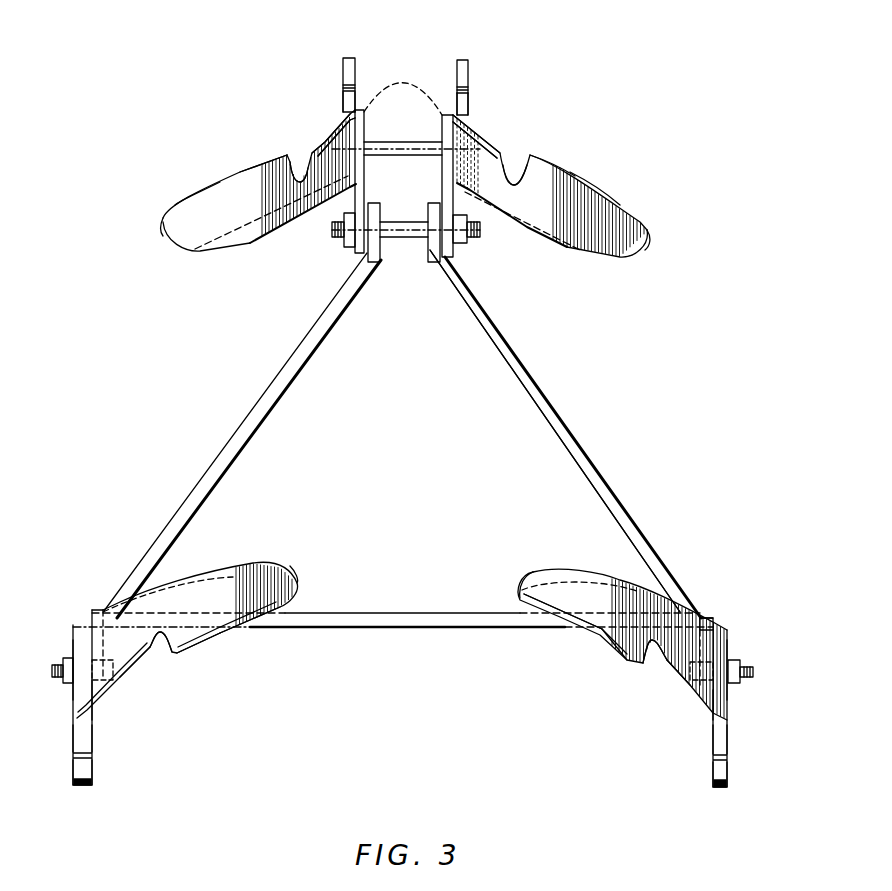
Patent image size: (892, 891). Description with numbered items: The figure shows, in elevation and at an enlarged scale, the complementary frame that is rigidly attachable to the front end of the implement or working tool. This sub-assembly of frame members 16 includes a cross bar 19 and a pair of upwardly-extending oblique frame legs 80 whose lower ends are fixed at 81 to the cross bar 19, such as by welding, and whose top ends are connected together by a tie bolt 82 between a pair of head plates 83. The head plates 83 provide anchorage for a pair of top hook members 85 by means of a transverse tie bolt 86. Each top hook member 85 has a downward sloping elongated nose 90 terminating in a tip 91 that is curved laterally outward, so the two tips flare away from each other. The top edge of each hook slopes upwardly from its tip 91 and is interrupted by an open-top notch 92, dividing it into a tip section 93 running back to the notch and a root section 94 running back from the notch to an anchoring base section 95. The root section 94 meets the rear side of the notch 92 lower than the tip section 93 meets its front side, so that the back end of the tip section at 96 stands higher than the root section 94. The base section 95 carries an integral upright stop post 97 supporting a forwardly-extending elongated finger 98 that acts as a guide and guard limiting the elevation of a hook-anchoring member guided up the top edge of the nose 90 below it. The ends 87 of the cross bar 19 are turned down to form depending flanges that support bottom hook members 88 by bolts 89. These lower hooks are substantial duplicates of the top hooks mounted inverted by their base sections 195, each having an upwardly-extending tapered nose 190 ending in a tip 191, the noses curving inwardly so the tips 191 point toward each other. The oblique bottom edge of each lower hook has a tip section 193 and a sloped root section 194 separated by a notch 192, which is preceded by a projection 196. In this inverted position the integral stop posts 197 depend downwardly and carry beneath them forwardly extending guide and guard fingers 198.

The frame members 16 is at (572, 402).
The cross bar 19 is at (385, 612).
The oblique frame legs 80 is at (210, 463).
The lower ends of frame legs 81 is at (103, 608).
The tie bolt 82 is at (393, 240).
The head plates 83 is at (350, 198).
The top hook members 85 is at (337, 123).
The transverse tie bolt 86 is at (397, 141).
The ends of the cross bar 87 is at (85, 648).
The bottom hook members 88 is at (117, 698).
The bolts 89 is at (53, 668).
The nose 90 is at (243, 203).
The tip 91 is at (163, 224).
The open-top notch 92 is at (297, 177).
The tip section 93 is at (201, 200).
The root section 94 is at (327, 140).
The anchoring base section 95 is at (403, 94).
The back end of tip section 96 is at (273, 160).
The stop post 97 is at (352, 102).
The finger 98 is at (350, 69).
The nose 190 is at (207, 595).
The tip 191 is at (300, 578).
The notch 192 is at (163, 652).
The tip section 193 is at (228, 632).
The sloped root section 194 is at (128, 683).
The base sections 195 is at (82, 692).
The projection 196 is at (187, 653).
The stop posts 197 is at (78, 736).
The guide and guard fingers 198 is at (73, 778).